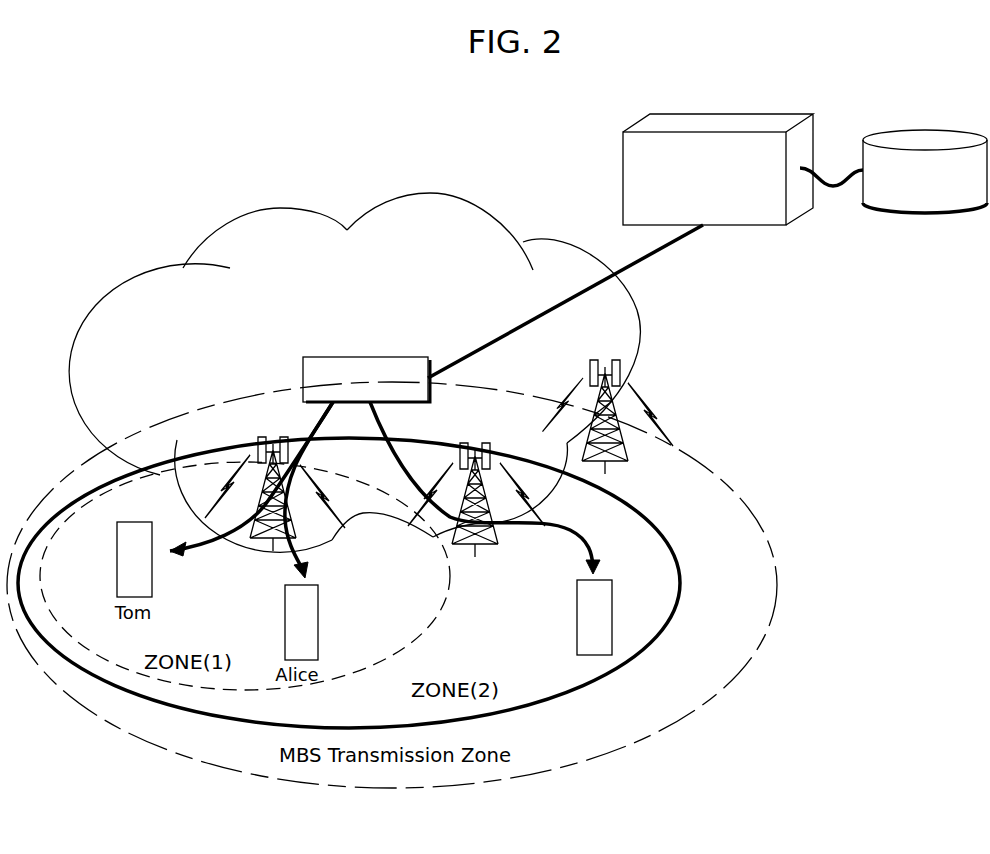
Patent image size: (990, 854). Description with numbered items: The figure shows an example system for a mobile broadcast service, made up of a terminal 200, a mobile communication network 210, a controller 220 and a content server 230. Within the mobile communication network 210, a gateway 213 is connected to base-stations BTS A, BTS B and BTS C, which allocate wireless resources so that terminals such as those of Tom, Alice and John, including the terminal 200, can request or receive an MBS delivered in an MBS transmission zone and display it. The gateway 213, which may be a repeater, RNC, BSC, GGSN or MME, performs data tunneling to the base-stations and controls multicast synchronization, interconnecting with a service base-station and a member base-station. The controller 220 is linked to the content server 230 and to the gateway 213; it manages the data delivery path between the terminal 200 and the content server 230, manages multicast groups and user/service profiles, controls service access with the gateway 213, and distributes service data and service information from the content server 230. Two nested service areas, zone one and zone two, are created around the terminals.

The terminal 200 is at (610, 580).
The mobile communication network 210 is at (453, 193).
The gateway 213 is at (370, 357).
The controller 220 is at (733, 114).
The content server 230 is at (930, 128).